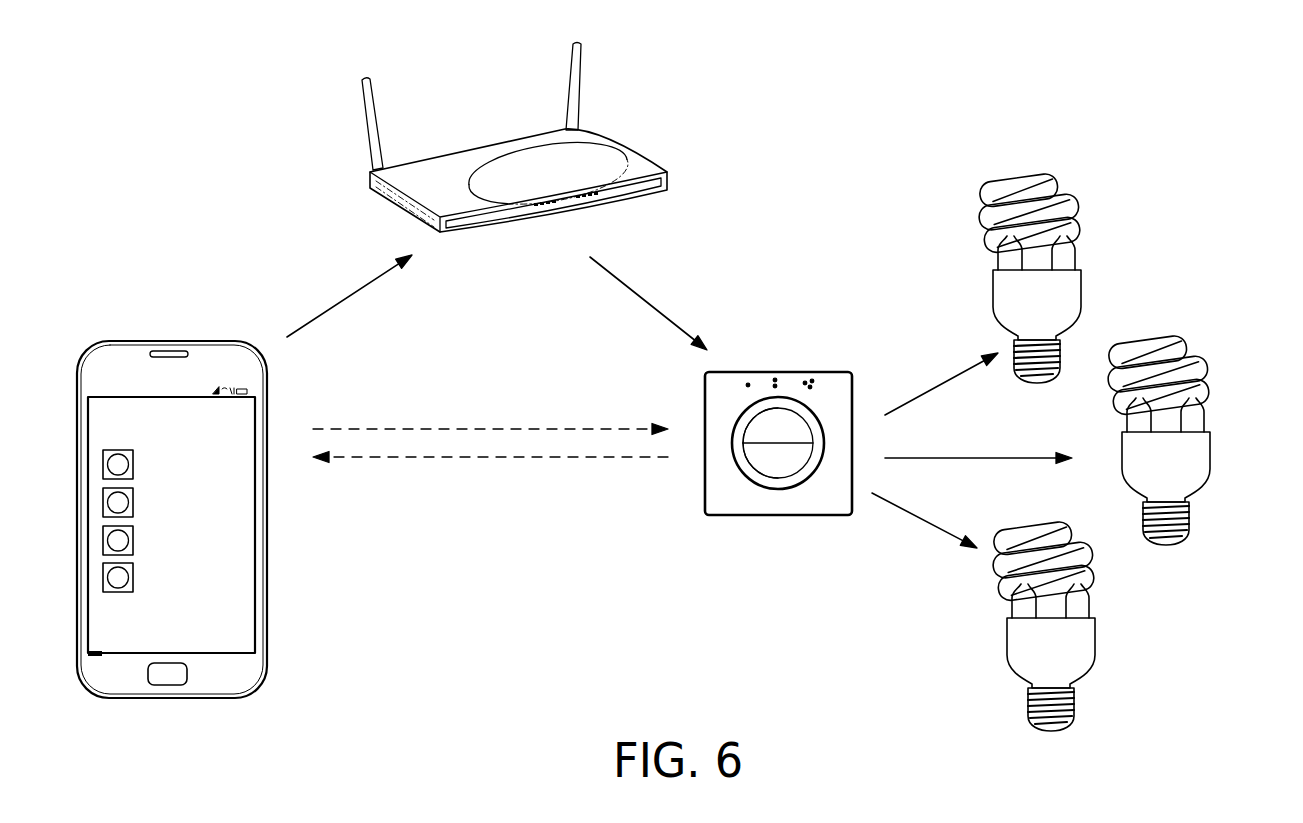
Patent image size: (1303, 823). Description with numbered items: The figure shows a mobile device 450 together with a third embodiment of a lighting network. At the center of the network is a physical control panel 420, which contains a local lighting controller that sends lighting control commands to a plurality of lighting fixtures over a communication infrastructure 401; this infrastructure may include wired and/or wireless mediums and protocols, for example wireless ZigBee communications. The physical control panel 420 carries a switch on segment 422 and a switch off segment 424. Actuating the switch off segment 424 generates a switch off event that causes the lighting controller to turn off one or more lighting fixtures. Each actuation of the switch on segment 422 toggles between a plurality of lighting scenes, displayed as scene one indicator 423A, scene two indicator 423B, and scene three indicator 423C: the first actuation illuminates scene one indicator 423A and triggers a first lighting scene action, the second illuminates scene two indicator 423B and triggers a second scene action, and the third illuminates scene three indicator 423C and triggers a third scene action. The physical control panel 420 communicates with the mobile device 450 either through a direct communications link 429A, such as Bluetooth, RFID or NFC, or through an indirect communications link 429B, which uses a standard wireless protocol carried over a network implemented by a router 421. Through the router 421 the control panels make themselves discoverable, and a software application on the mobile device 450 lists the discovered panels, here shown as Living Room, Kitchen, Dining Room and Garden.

The communication infrastructure 401 is at (874, 532).
The physical control panel 420 is at (720, 516).
The router 421 is at (468, 146).
The switch on segment 422 is at (744, 433).
The scene one indicator 423A is at (742, 356).
The scene two indicator 423B is at (775, 352).
The scene three indicator 423C is at (806, 356).
The switch off segment 424 is at (746, 452).
The direct communications link 429A is at (472, 532).
The indirect communications link 429B is at (742, 113).
The mobile device 450 is at (134, 340).